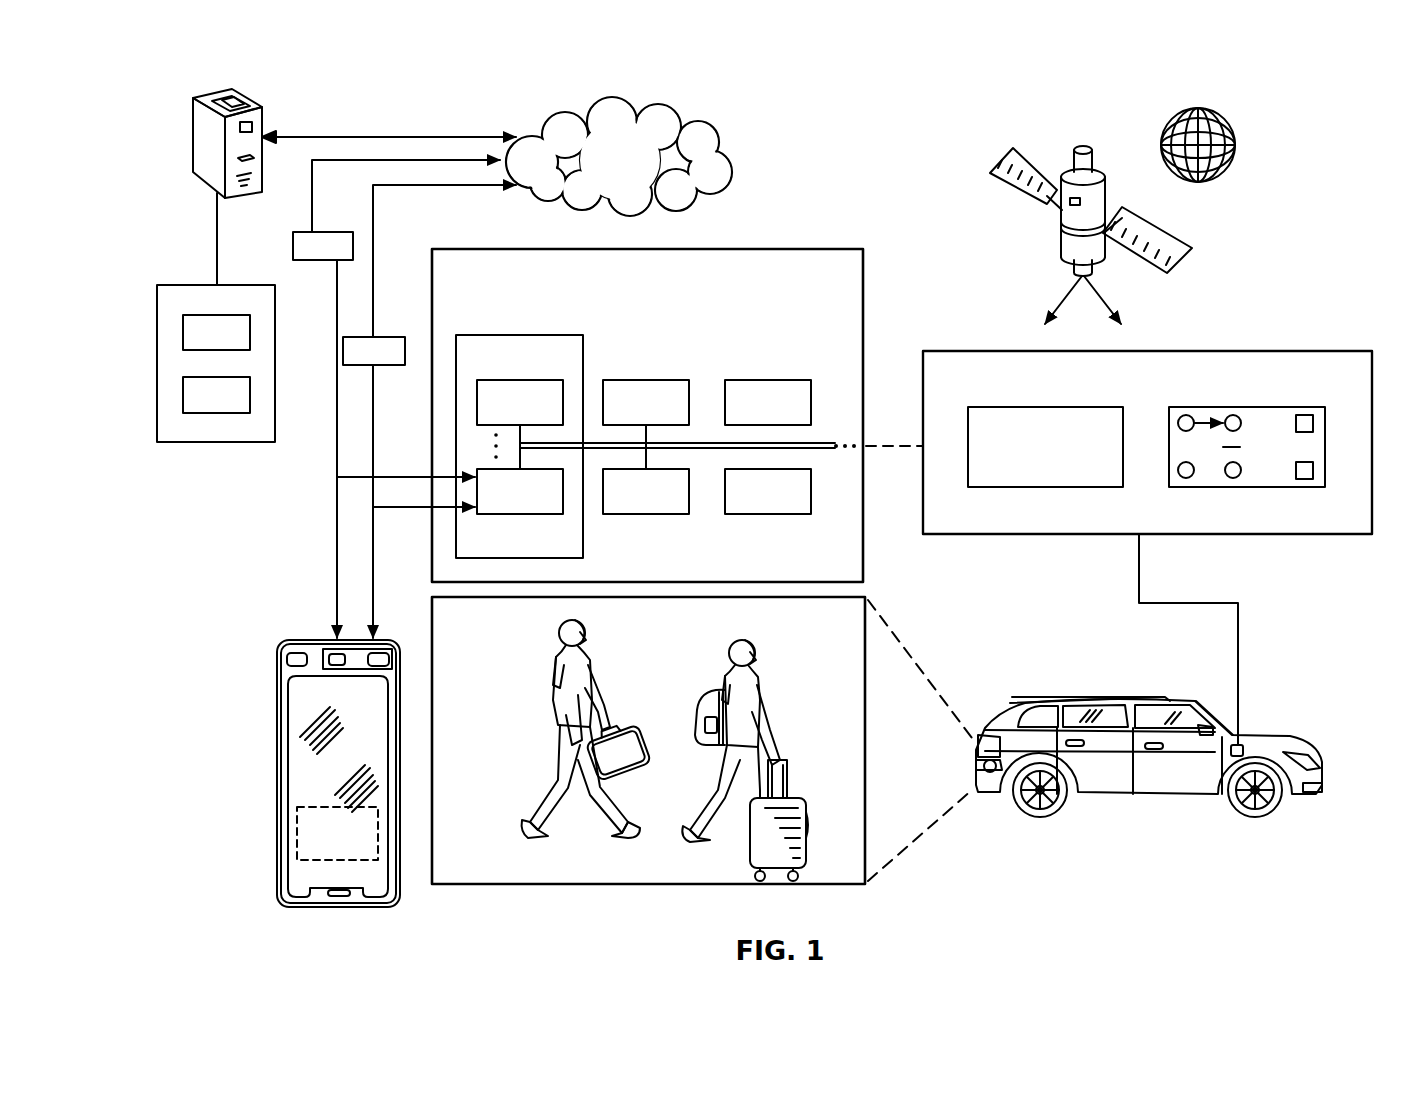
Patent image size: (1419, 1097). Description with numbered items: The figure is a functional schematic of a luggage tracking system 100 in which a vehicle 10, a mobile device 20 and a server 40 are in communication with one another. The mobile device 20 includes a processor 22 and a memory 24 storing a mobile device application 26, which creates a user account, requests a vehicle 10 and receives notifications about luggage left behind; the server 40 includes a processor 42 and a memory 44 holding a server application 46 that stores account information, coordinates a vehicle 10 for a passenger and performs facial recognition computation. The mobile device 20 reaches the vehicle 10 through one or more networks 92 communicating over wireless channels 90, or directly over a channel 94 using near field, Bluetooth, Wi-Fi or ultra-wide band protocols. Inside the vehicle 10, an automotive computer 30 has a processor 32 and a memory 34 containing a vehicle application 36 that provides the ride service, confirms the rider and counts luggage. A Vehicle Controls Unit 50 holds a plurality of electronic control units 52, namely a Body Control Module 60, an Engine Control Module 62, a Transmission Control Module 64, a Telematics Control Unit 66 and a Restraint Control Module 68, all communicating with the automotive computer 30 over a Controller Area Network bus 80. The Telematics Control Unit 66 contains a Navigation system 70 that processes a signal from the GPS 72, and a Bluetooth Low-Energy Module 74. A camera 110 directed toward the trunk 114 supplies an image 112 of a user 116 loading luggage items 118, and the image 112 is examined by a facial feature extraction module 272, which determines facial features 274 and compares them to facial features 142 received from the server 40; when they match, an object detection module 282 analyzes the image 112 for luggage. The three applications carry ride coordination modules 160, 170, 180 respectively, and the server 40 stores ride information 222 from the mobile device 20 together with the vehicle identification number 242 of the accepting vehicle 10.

The vehicle 10 is at (1188, 771).
The mobile device 20 is at (319, 751).
The processor 22 is at (287, 660).
The memory 24 is at (340, 654).
The mobile device application 26 is at (389, 660).
The automotive computer 30 is at (975, 351).
The processor 32 is at (1020, 407).
The memory 34 is at (1253, 462).
The vehicle application 36 is at (1313, 423).
The server 40 is at (233, 119).
The processor 42 is at (254, 125).
The memory 44 is at (208, 128).
The server application 46 is at (222, 99).
The Vehicle Controls Unit 50 is at (485, 249).
The electronic control units 52 is at (647, 426).
The Body Control Module 60 is at (657, 380).
The Engine Control Module 62 is at (780, 380).
The Transmission Control Module 64 is at (657, 514).
The Telematics Control Unit 66 is at (518, 335).
The Restraint Control Module 68 is at (780, 514).
The Navigation system 70 is at (530, 380).
The GPS 72 is at (1033, 124).
The Bluetooth Low-Energy Module 74 is at (530, 514).
The Controller Area Network bus 80 is at (825, 443).
The wireless channels 90 is at (410, 137).
The networks 92 is at (683, 121).
The channel 94 is at (374, 540).
The luggage tracking system 100 is at (1313, 112).
The camera 110 is at (992, 775).
The image 112 is at (880, 657).
The trunk 114 is at (978, 718).
The user 116 is at (552, 640).
The luggage items 118 is at (705, 690).
The facial features 142 is at (1233, 478).
The ride coordination module 160 is at (337, 663).
The ride coordination module 170 is at (1313, 470).
The ride coordination module 180 is at (238, 102).
The ride information 222 is at (183, 330).
The vehicle identification number 242 is at (183, 393).
The facial feature extraction module 272 is at (1183, 415).
The facial features 274 is at (1236, 415).
The object detection module 282 is at (1186, 478).